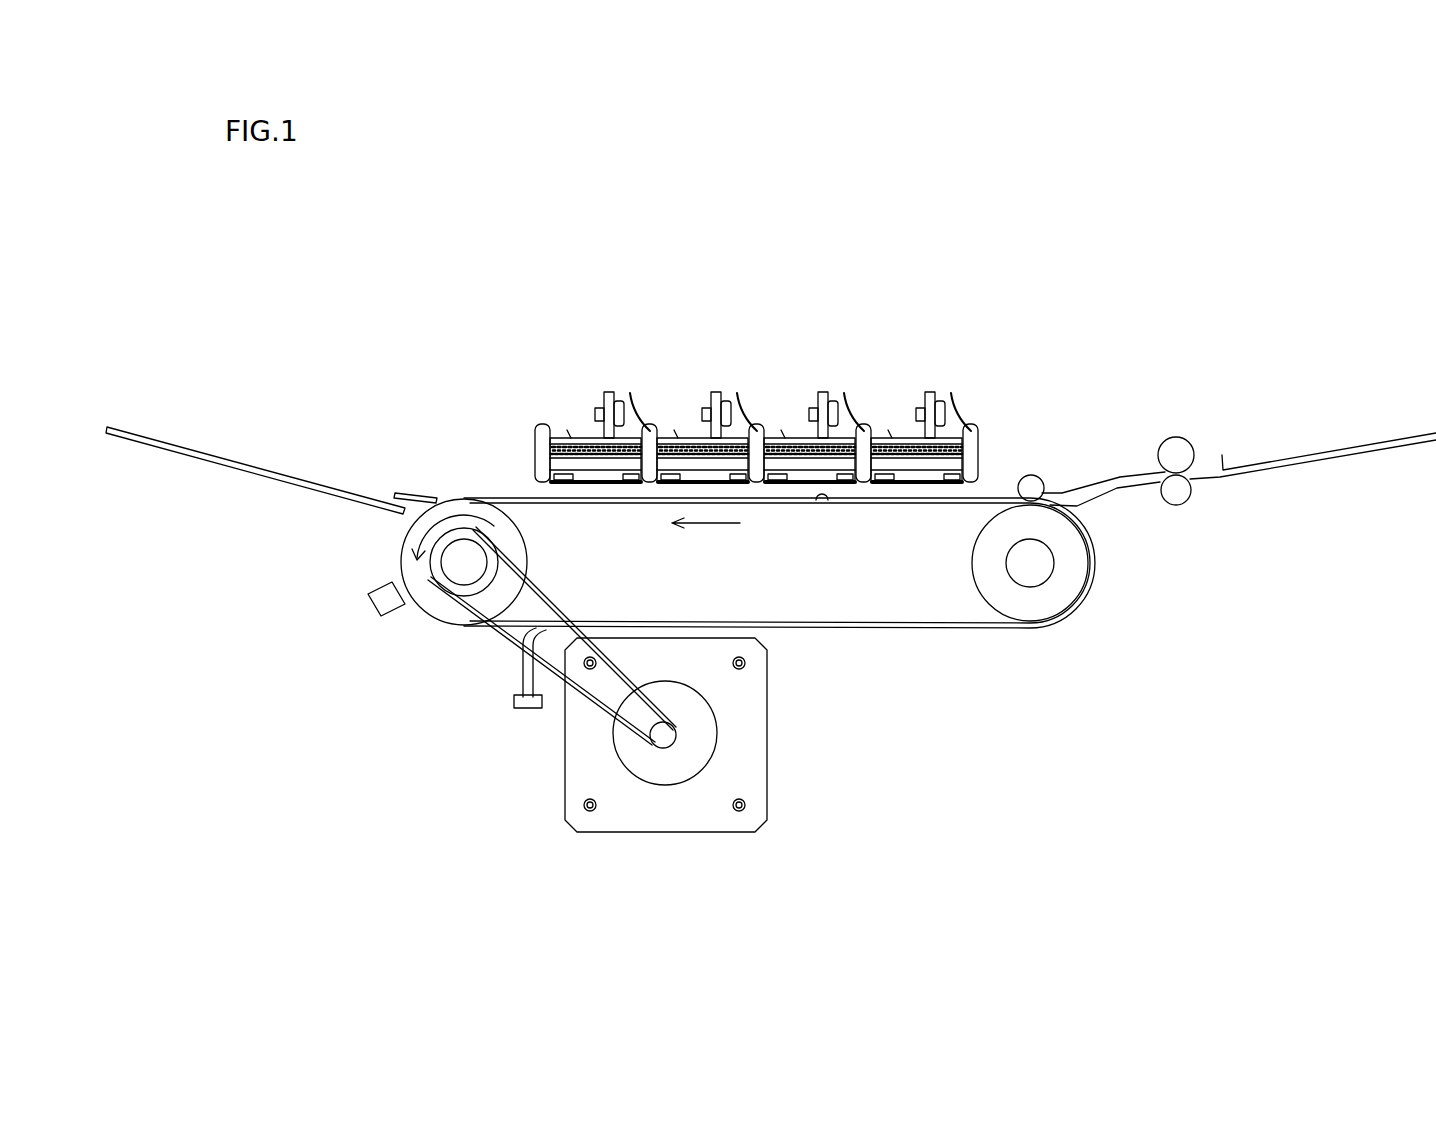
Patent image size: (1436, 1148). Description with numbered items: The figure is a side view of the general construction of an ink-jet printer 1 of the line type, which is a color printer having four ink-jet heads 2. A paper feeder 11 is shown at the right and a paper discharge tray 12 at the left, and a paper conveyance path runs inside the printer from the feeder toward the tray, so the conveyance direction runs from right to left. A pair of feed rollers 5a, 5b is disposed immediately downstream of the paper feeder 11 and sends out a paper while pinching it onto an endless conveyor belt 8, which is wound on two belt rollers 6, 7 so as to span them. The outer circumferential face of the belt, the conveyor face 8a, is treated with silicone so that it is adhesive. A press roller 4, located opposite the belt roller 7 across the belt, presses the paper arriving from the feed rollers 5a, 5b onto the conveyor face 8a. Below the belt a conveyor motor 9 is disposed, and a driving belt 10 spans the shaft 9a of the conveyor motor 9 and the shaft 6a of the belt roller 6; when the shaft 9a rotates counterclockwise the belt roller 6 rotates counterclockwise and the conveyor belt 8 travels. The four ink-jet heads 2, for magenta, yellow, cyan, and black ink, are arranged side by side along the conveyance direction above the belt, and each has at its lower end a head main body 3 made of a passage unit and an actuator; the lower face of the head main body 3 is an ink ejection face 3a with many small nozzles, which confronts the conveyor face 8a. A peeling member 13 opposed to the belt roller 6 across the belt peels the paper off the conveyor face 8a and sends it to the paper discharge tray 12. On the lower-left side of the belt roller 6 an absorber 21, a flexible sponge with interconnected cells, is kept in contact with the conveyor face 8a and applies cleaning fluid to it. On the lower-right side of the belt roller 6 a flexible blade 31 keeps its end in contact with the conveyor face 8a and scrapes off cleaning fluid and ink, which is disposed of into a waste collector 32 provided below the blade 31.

The ink-jet printer 1 is at (1163, 290).
The ink-jet head 2 is at (640, 381).
The head main body 3 is at (578, 500).
The ink ejection face 3a is at (662, 490).
The press roller 4 is at (1035, 476).
The feed roller 5a is at (1178, 438).
The feed roller 5b is at (1178, 506).
The belt roller 6 is at (451, 617).
The shaft 6a is at (475, 568).
The belt roller 7 is at (1045, 609).
The conveyor belt 8 is at (975, 631).
The conveyor face 8a is at (822, 503).
The conveyor motor 9 is at (780, 770).
The shaft 9a is at (668, 735).
The driving belt 10 is at (583, 692).
The paper feeder 11 is at (1342, 397).
The paper discharge tray 12 is at (262, 421).
The peeling member 13 is at (413, 494).
The absorber 21 is at (402, 594).
The blade 31 is at (523, 672).
The waste collector 32 is at (527, 708).